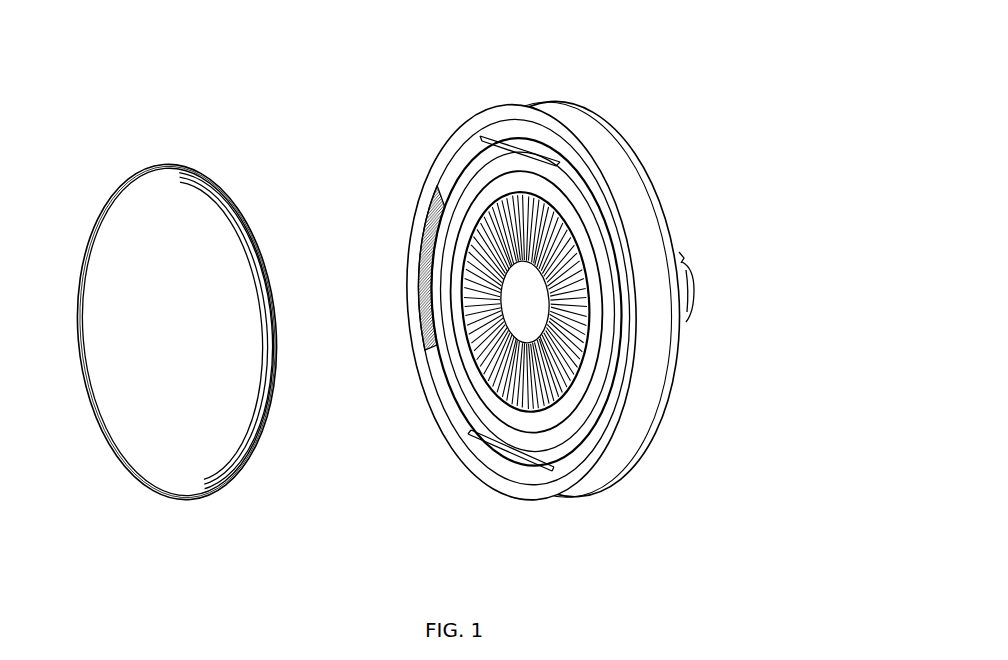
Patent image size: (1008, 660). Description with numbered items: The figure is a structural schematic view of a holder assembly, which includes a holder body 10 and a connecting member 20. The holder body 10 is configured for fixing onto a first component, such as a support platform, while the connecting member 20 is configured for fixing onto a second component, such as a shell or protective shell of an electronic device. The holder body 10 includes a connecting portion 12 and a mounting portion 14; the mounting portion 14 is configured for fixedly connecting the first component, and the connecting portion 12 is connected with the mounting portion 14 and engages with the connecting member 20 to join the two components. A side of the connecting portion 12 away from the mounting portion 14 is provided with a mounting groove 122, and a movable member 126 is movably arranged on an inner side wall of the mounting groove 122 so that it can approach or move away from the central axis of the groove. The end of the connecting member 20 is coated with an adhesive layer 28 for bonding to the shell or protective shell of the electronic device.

The holder body 10 is at (808, 380).
The connecting portion 12 is at (617, 448).
The mounting portion 14 is at (692, 300).
The connecting member 20 is at (187, 442).
The adhesive layer 28 is at (135, 249).
The mounting groove 122 is at (452, 168).
The movable member 126 is at (527, 138).